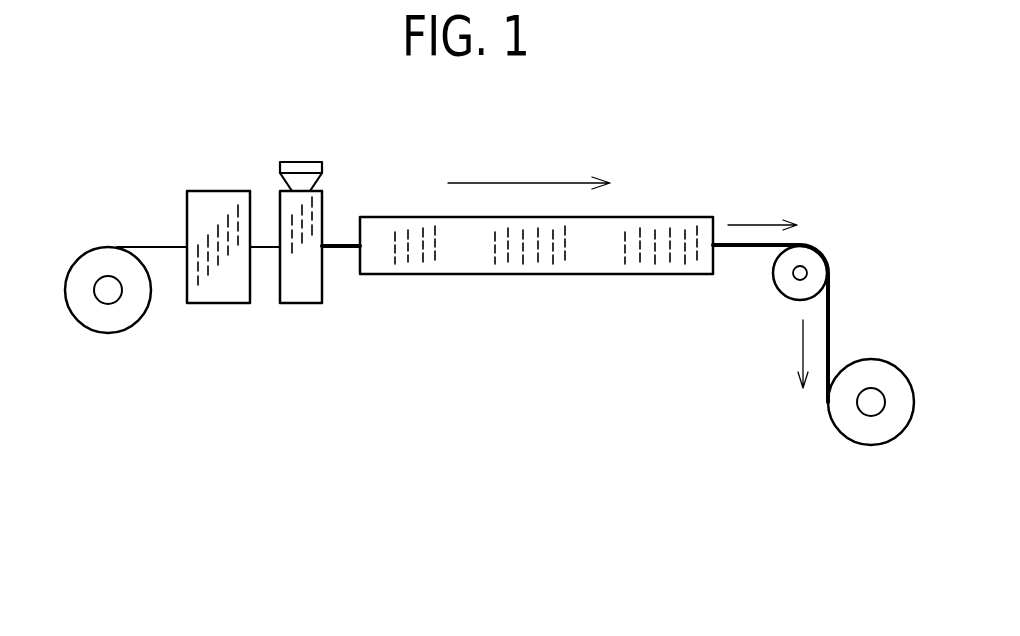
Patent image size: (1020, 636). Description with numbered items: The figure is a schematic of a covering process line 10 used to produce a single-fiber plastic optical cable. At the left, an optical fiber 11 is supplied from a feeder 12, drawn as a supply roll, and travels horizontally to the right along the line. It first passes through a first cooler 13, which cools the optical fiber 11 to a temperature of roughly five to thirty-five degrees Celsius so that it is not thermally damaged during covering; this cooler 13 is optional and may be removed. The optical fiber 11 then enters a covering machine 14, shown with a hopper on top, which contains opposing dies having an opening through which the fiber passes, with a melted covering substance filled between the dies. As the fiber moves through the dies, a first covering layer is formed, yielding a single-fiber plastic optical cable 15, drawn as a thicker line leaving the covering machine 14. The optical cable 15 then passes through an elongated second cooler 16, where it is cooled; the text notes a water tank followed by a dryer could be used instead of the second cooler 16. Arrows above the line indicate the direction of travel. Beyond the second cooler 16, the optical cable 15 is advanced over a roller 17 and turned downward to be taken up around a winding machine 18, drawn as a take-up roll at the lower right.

The covering process line 10 is at (489, 313).
The optical fiber 11 is at (143, 247).
The feeder 12 is at (115, 315).
The first cooler 13 is at (220, 287).
The covering machine 14 is at (298, 290).
The single-fiber plastic optical cable 15 is at (340, 245).
The second cooler 16 is at (457, 258).
The roller 17 is at (800, 262).
The winding machine 18 is at (865, 426).